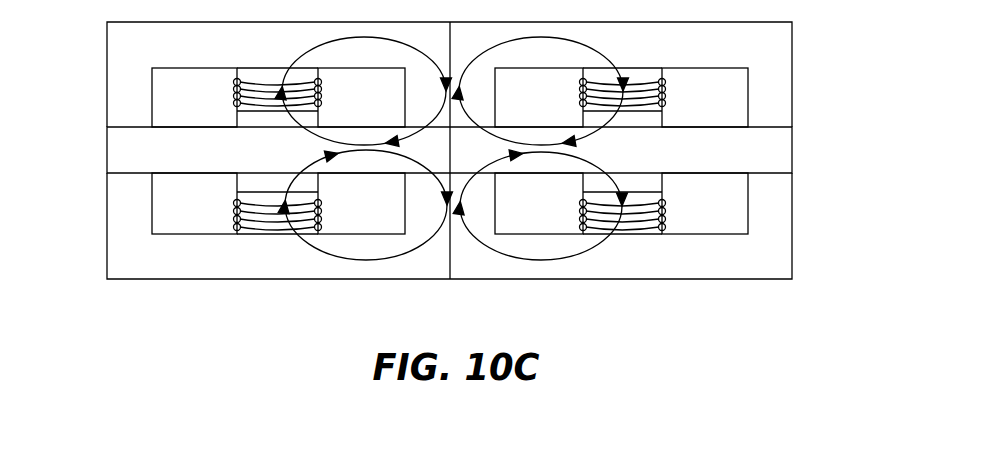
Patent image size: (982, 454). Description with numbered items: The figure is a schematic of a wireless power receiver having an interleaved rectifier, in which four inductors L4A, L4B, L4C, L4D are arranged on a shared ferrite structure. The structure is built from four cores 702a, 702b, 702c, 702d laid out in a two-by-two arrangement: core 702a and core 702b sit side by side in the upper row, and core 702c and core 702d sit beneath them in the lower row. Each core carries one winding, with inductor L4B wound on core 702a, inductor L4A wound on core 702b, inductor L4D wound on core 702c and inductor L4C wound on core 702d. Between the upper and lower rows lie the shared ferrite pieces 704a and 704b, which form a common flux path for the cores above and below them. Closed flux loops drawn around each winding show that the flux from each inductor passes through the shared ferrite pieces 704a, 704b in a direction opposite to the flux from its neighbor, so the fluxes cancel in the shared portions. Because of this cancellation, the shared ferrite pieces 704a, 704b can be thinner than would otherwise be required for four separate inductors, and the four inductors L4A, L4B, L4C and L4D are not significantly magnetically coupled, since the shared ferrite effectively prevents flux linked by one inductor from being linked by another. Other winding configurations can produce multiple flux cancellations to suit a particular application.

The core 702a is at (125, 45).
The core 702b is at (776, 45).
The core 702c is at (125, 250).
The core 702d is at (776, 250).
The shared ferrite piece 704a is at (125, 148).
The shared ferrite piece 704b is at (776, 149).
The inductor L4A is at (640, 98).
The inductor L4B is at (262, 98).
The inductor L4C is at (642, 205).
The inductor L4D is at (263, 205).